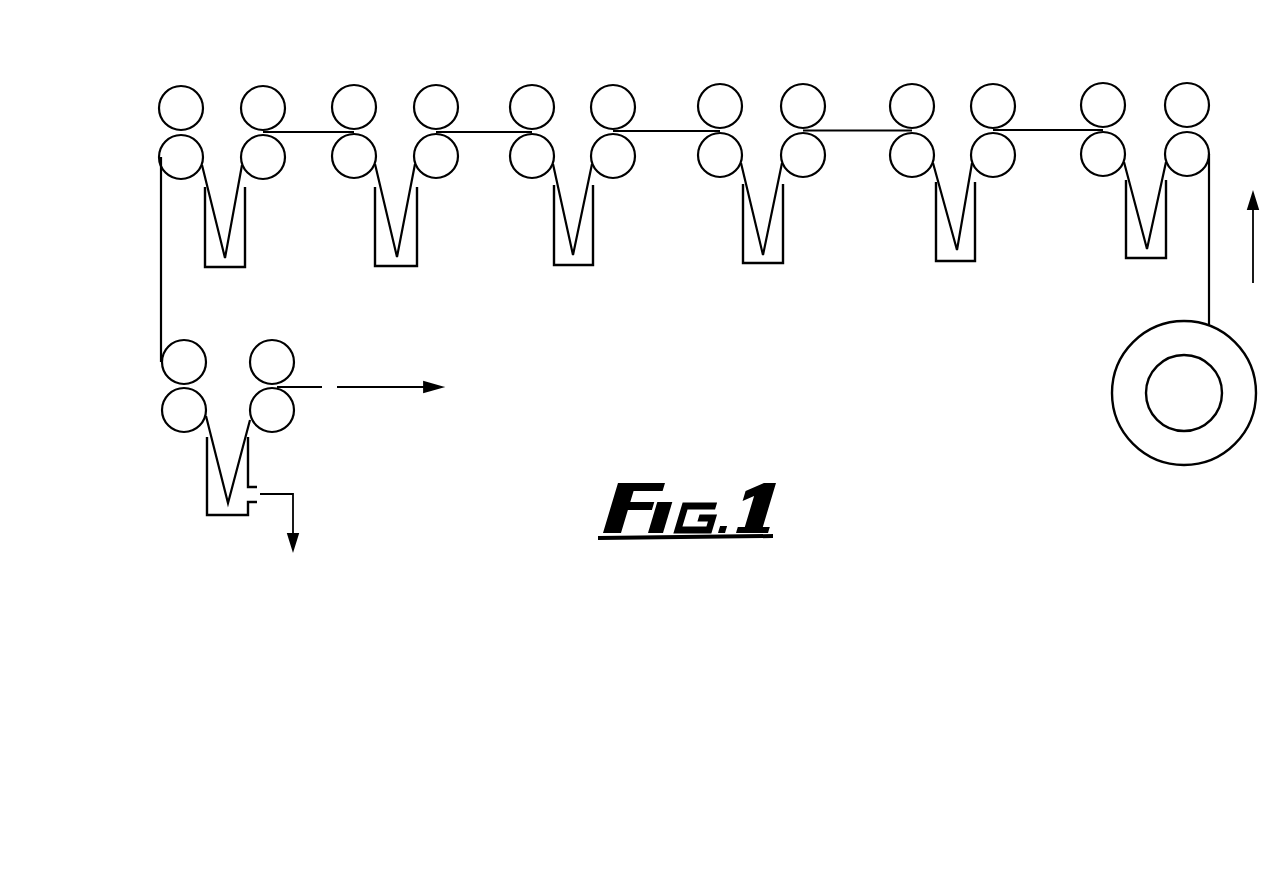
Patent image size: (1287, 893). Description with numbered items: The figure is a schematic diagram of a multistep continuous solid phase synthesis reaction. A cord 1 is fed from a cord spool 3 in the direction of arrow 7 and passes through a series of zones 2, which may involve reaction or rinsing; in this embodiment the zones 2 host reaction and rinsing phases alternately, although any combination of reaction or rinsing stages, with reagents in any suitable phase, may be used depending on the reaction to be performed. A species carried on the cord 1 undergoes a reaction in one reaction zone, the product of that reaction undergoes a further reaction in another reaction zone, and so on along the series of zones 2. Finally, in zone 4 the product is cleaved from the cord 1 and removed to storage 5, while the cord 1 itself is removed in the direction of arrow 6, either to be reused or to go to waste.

The cord 1 is at (1049, 115).
The zones 2 is at (779, 272).
The cord spool 3 is at (1228, 448).
The zone 4 is at (199, 486).
The storage 5 is at (281, 539).
The arrow 6 is at (389, 373).
The arrow 7 is at (1262, 238).